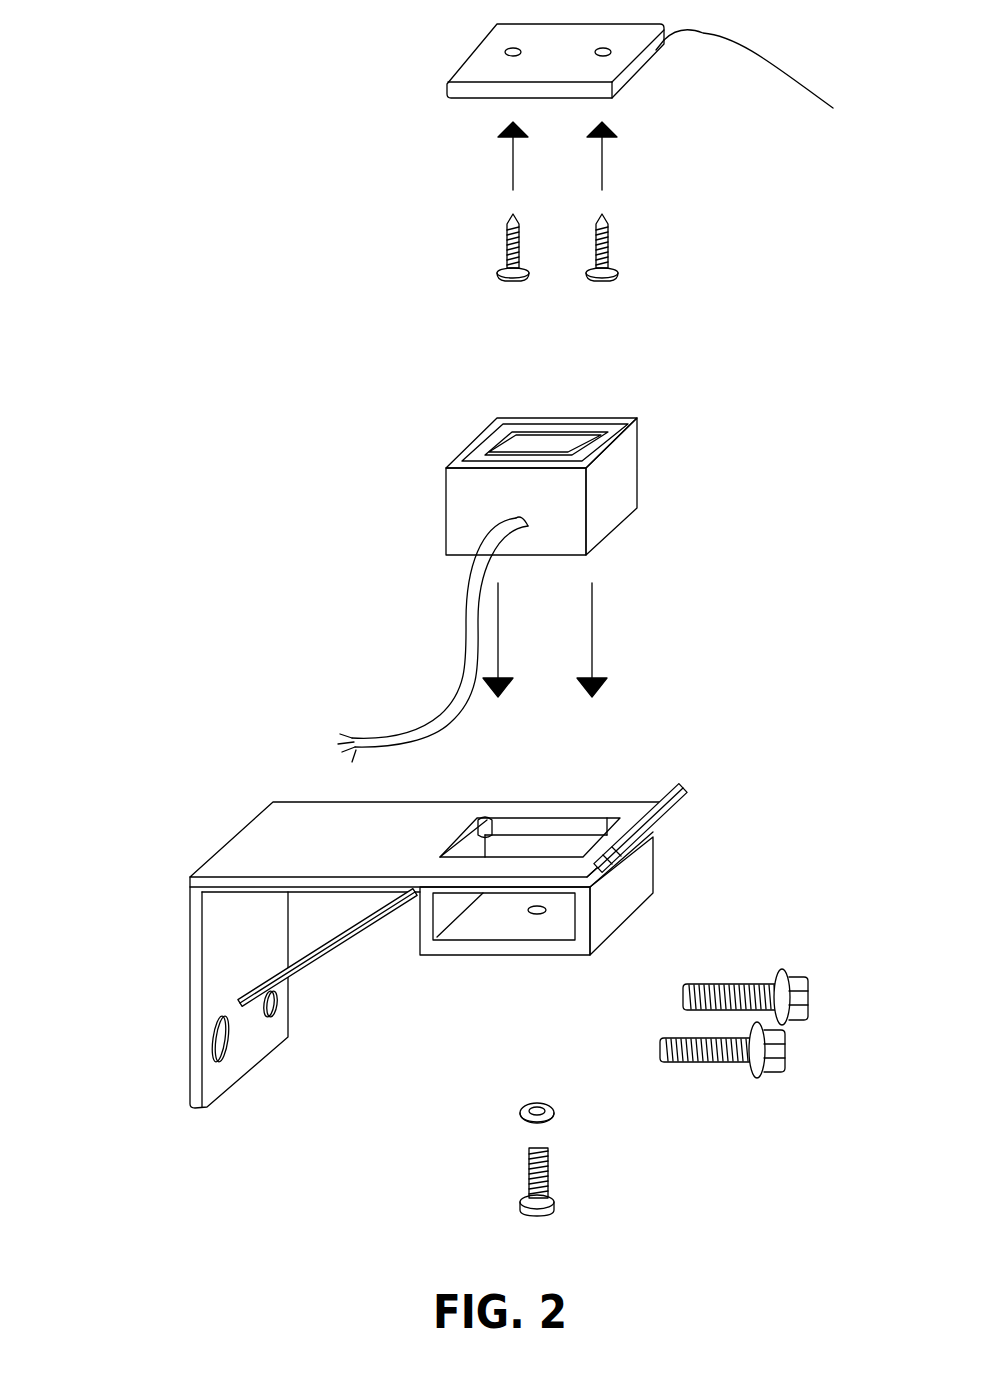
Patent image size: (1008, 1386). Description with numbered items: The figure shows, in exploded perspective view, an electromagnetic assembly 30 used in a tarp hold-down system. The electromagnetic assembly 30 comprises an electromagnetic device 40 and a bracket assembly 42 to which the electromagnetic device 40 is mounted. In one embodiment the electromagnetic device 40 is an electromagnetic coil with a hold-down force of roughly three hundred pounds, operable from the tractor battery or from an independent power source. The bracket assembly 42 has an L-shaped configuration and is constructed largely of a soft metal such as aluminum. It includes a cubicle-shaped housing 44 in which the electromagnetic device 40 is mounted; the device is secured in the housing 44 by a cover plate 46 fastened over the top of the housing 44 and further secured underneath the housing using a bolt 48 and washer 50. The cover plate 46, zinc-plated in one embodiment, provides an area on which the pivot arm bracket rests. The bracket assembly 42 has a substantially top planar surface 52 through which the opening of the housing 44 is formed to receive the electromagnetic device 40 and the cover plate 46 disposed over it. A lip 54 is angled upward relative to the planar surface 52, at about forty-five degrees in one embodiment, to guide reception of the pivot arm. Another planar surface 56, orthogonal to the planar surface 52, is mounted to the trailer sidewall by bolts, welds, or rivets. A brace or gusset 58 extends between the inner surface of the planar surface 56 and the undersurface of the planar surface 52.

The electromagnetic assembly 30 is at (220, 59).
The cover plate 46 is at (663, 77).
The electromagnetic device 40 is at (622, 492).
The bracket assembly 42 is at (730, 742).
The top planar surface 52 is at (273, 835).
The lip 54 is at (667, 825).
The housing 44 is at (617, 908).
The planar surface 56 is at (148, 971).
The brace or gusset 58 is at (337, 947).
The washer 50 is at (550, 1123).
The bolt 48 is at (550, 1193).